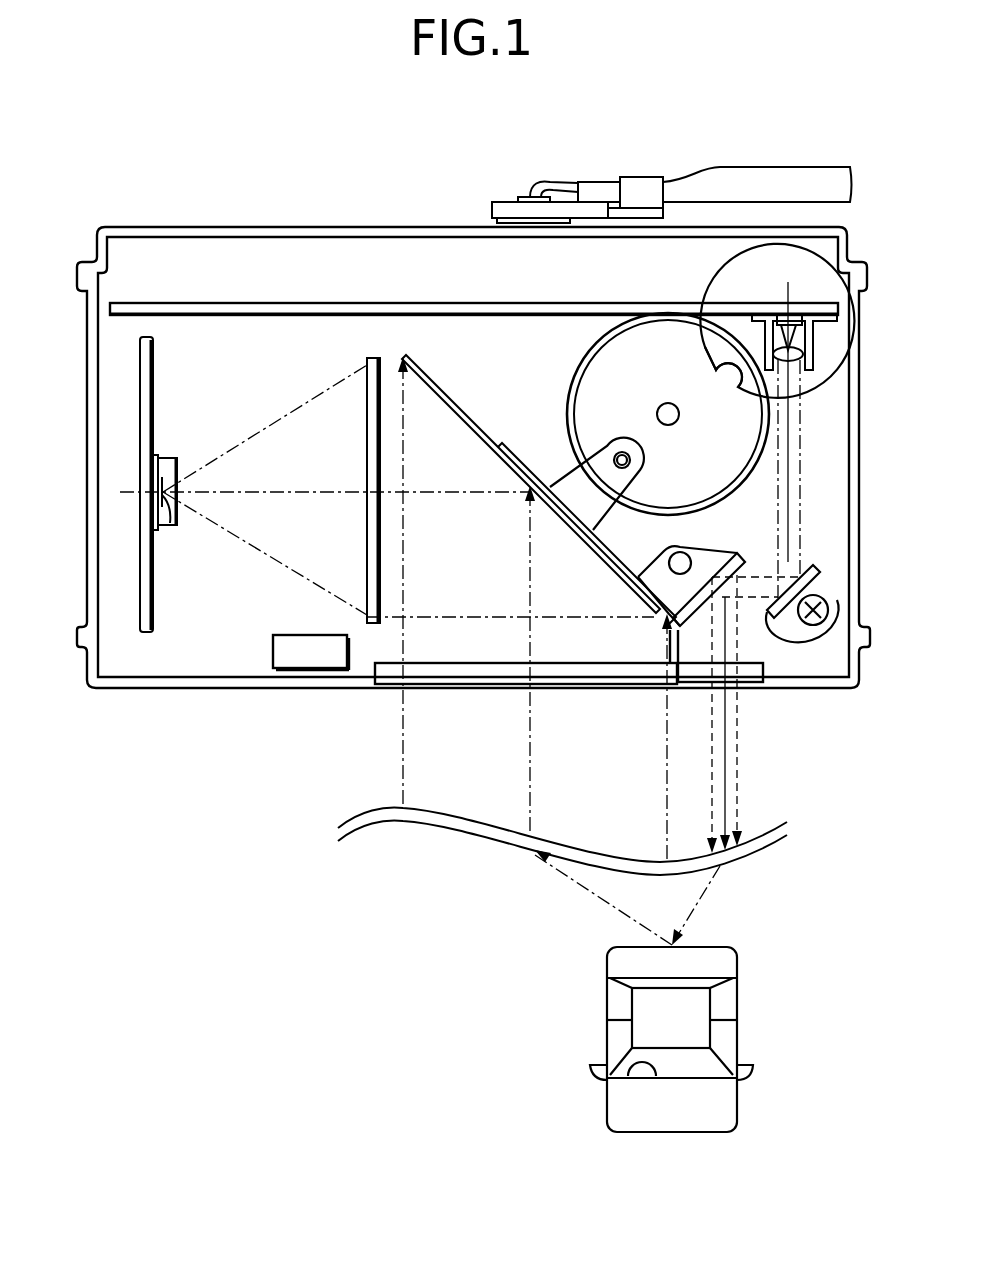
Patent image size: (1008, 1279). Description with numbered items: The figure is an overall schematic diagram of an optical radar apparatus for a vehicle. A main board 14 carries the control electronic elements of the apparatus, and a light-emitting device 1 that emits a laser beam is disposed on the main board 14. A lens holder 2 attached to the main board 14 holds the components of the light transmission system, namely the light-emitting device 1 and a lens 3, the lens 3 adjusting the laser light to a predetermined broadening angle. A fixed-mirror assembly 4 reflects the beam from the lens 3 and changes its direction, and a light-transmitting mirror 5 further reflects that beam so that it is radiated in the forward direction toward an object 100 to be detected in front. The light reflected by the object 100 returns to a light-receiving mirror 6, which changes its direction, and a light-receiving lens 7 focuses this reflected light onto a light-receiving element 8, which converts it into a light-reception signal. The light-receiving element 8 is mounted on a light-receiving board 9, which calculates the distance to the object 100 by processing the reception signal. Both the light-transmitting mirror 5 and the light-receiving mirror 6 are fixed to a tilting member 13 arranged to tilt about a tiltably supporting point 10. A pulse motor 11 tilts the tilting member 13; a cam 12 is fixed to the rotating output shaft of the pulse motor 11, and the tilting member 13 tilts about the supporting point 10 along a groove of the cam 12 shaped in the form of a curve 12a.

The light-emitting device 1 is at (823, 318).
The lens holder 2 is at (812, 357).
The lens 3 is at (795, 363).
The fixed-mirror assembly 4 is at (768, 622).
The light-transmitting mirror 5 is at (700, 605).
The light-receiving mirror 6 is at (468, 427).
The light-receiving lens 7 is at (367, 538).
The light-receiving element 8 is at (176, 523).
The light-receiving board 9 is at (150, 382).
The tiltably supporting point 10 is at (690, 561).
The pulse motor 11 is at (578, 367).
The cam 12 is at (583, 403).
The curve 12a is at (718, 360).
The tilting member 13 is at (552, 488).
The main board 14 is at (740, 303).
The object 100 is at (727, 966).